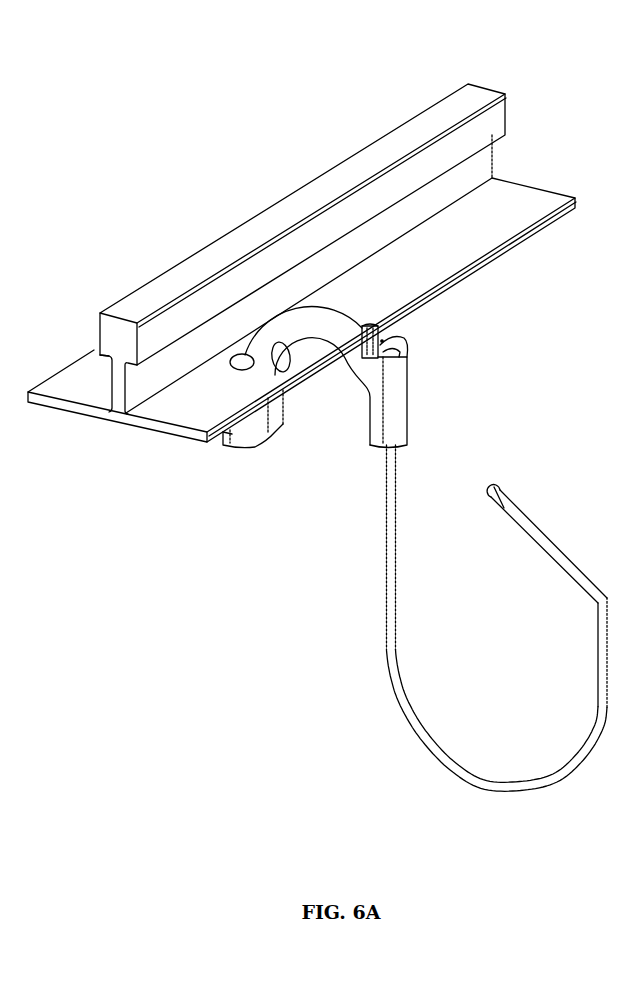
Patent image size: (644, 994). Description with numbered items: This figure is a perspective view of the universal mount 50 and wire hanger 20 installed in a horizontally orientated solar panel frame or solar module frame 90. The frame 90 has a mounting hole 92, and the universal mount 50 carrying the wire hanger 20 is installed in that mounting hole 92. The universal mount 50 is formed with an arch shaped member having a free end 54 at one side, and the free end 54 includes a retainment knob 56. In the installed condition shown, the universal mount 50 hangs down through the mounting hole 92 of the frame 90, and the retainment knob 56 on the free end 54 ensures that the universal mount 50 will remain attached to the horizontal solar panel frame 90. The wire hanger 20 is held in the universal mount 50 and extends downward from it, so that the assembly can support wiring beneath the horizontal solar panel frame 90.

The wire hanger 20 is at (385, 622).
The universal mount 50 is at (345, 310).
The free end 54 is at (248, 437).
The retainment knob 56 is at (225, 443).
The solar panel frame 90 is at (518, 200).
The mounting hole 92 is at (237, 374).